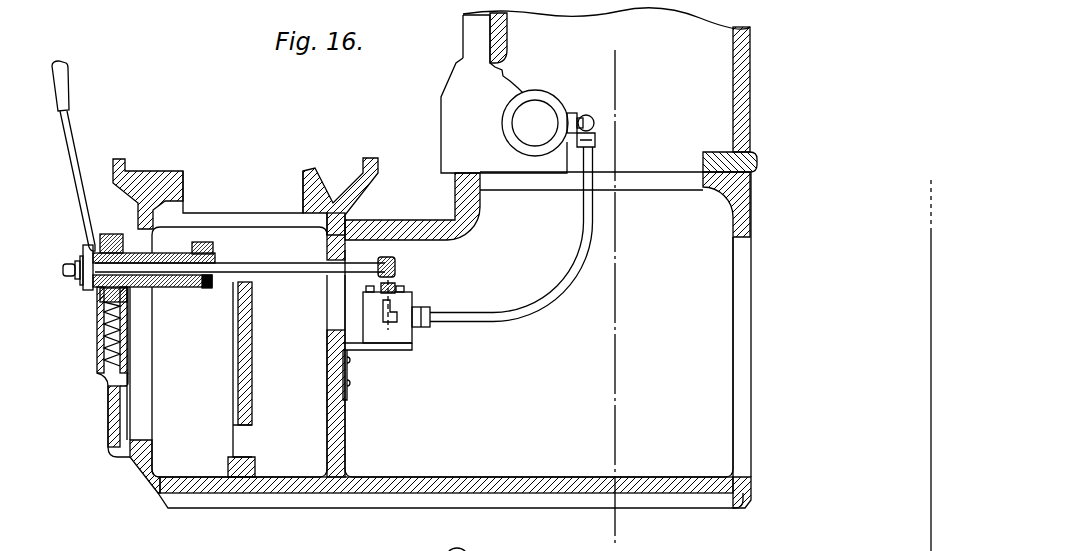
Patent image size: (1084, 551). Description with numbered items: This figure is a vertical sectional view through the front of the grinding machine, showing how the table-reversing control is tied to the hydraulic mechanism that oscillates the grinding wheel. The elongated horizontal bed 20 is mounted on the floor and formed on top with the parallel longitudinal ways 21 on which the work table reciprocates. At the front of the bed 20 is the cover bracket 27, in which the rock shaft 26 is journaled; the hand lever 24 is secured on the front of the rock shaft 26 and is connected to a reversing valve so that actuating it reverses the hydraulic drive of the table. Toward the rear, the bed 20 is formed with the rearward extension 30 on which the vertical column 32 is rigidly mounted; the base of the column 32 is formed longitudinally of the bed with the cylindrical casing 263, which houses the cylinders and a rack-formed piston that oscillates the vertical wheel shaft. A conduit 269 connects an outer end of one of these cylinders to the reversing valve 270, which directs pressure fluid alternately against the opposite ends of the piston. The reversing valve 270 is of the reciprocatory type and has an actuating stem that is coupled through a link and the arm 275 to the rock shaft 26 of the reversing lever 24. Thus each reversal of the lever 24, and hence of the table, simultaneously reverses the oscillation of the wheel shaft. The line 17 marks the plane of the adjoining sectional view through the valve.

The line 17— 17 is at (598, 62).
The bed 20 is at (201, 496).
The ways 21 is at (312, 164).
The hand lever 24 is at (70, 189).
The rock shaft 26 is at (278, 263).
The cover bracket 27 is at (108, 411).
The rearward extension 30 is at (683, 482).
The vertical column 32 is at (752, 83).
The cylindrical casing 263 is at (548, 98).
The conduit 269 is at (571, 268).
The reversing valve 270 is at (403, 340).
The arm 275 is at (402, 285).